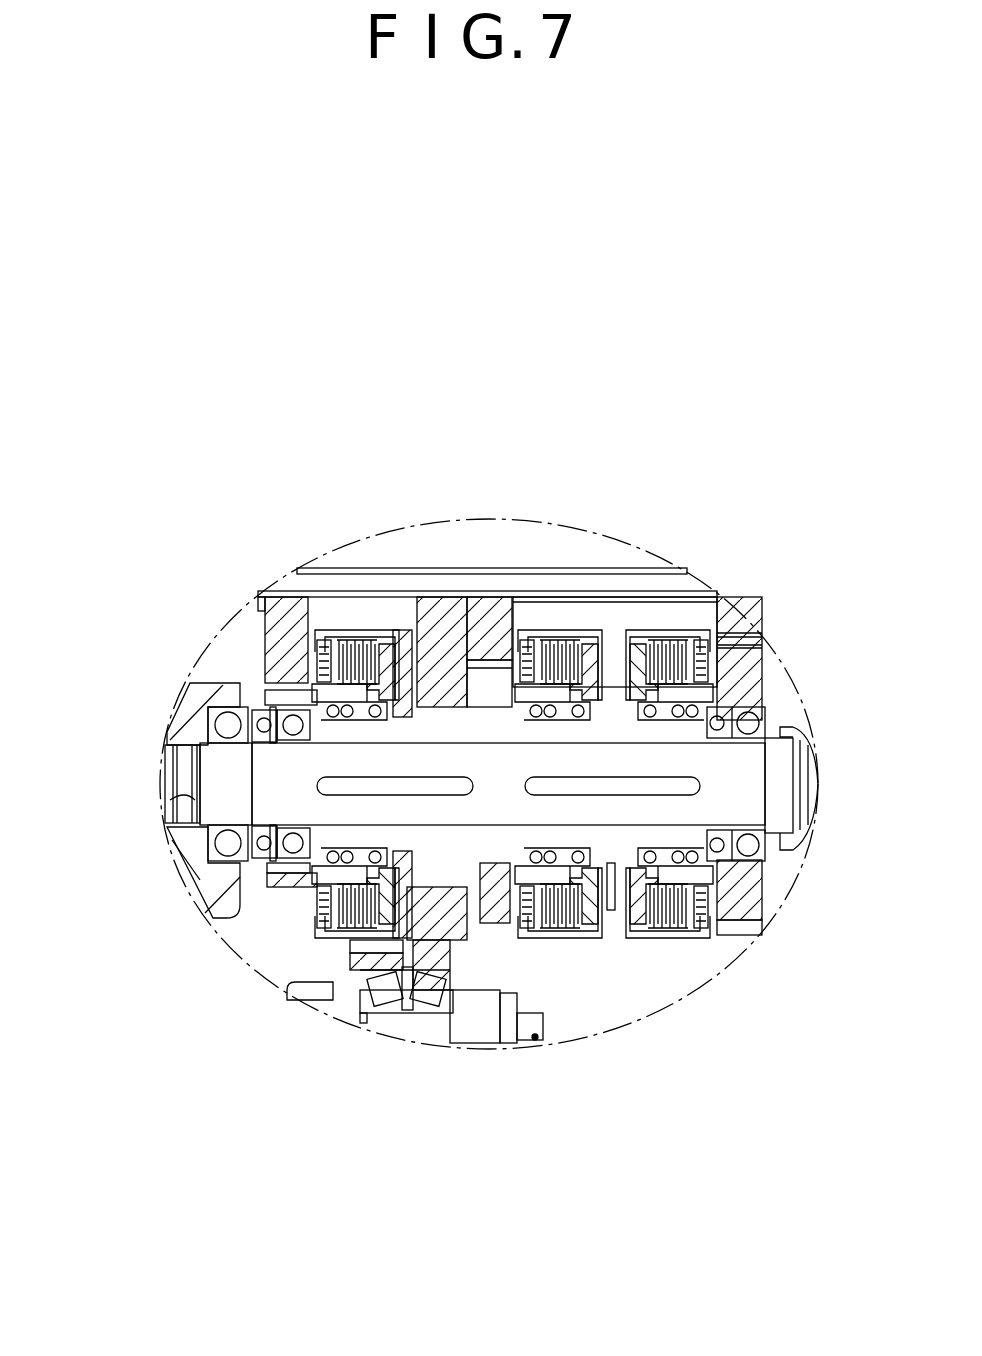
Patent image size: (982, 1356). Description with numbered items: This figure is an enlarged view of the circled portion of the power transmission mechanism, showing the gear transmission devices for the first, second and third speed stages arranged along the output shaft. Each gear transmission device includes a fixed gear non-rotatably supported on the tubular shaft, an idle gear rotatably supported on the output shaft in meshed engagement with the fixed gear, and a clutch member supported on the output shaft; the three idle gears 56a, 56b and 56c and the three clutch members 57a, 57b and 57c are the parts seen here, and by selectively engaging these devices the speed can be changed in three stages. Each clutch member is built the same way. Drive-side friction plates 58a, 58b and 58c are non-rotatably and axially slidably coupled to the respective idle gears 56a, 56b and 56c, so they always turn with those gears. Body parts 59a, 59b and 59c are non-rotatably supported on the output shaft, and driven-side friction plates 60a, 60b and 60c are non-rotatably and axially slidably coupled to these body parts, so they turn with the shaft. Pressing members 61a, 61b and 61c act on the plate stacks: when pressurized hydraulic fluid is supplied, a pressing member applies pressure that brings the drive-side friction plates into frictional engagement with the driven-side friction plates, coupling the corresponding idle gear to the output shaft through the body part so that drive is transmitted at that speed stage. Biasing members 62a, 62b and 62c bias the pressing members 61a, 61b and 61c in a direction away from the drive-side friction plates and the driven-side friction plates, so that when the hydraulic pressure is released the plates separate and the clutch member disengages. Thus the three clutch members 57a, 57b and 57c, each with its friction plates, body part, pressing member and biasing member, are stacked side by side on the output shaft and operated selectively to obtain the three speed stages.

The idle gear 56a is at (738, 892).
The idle gear 56b is at (493, 877).
The idle gear 56c is at (297, 867).
The clutch member 57a is at (870, 1172).
The clutch member 57b is at (894, 492).
The clutch member 57c is at (427, 330).
The drive-side friction plates 58a is at (700, 928).
The drive-side friction plates 58b is at (520, 633).
The drive-side friction plates 58c is at (323, 678).
The body part 59a is at (642, 932).
The body part 59b is at (690, 600).
The body part 59c is at (400, 640).
The driven-side friction plates 60a is at (657, 917).
The driven-side friction plates 60b is at (577, 633).
The driven-side friction plates 60c is at (345, 677).
The pressing member 61a is at (637, 910).
The pressing member 61b is at (630, 653).
The pressing member 61c is at (380, 640).
The biasing member 62a is at (732, 928).
The biasing member 62b is at (600, 667).
The biasing member 62c is at (362, 653).